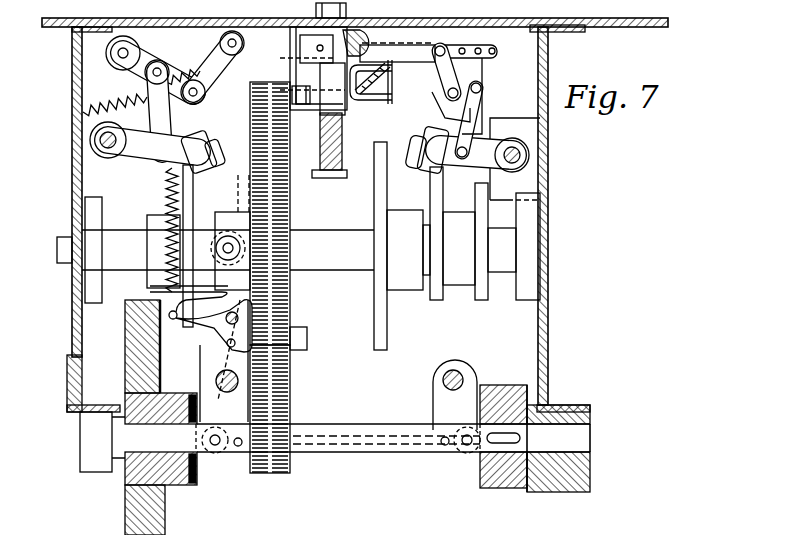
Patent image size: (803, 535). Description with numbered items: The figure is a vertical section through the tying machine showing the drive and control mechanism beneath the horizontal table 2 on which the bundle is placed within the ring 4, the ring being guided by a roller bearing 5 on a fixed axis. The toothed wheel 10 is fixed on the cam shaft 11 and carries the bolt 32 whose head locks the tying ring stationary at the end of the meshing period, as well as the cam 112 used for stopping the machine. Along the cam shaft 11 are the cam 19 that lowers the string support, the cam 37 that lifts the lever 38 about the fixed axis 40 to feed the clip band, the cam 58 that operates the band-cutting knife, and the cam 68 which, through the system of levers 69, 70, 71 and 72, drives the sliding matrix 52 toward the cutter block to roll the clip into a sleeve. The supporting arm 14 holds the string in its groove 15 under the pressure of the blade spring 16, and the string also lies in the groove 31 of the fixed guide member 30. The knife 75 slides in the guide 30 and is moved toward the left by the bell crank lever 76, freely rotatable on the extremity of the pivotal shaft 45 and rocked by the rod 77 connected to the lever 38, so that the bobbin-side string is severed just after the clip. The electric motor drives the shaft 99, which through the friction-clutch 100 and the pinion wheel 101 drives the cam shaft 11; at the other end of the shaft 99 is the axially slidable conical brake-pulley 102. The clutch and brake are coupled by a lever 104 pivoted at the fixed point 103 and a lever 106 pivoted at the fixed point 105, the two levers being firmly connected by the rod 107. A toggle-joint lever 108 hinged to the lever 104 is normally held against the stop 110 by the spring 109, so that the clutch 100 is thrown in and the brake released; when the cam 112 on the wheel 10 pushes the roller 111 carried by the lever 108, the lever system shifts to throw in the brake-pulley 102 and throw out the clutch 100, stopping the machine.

The horizontal table 2 is at (203, 18).
The ring 4 is at (330, 178).
The roller bearing 5 is at (318, 128).
The toothed wheel 10 is at (292, 376).
The cam shaft 11 is at (334, 258).
The supporting arm 14 is at (391, 96).
The groove 15 is at (374, 98).
The blade spring 16 is at (393, 70).
The cam 19 is at (483, 299).
The fixed guide member 30 is at (403, 36).
The groove 31 is at (358, 28).
The bolt 32 is at (307, 341).
The cam 37 is at (437, 301).
The lever 38 is at (451, 169).
The fixed axis 40 is at (530, 156).
The pivotal shaft 45 is at (440, 103).
The sliding matrix 52 is at (241, 52).
The cam 58 is at (388, 346).
The cam 68 is at (194, 179).
The lever 69 is at (180, 170).
The lever 70 is at (170, 117).
The lever 71 is at (152, 58).
The lever 72 is at (208, 90).
The knife 75 is at (498, 55).
The bell crank lever 76 is at (468, 78).
The rod 77 is at (480, 110).
The shaft 99 is at (362, 453).
The friction-clutch 100 is at (178, 483).
The pinion wheel 101 is at (258, 470).
The conical brake-pulley 102 is at (492, 464).
The fixed point 103 is at (216, 381).
The lever 104 is at (233, 351).
The fixed point 105 is at (461, 378).
The lever 106 is at (436, 398).
The rod 107 is at (325, 449).
The toggle-joint lever 108 is at (160, 289).
The spring 109 is at (167, 201).
The stop 110 is at (226, 344).
The roller 111 is at (228, 212).
The cam 112 is at (241, 191).